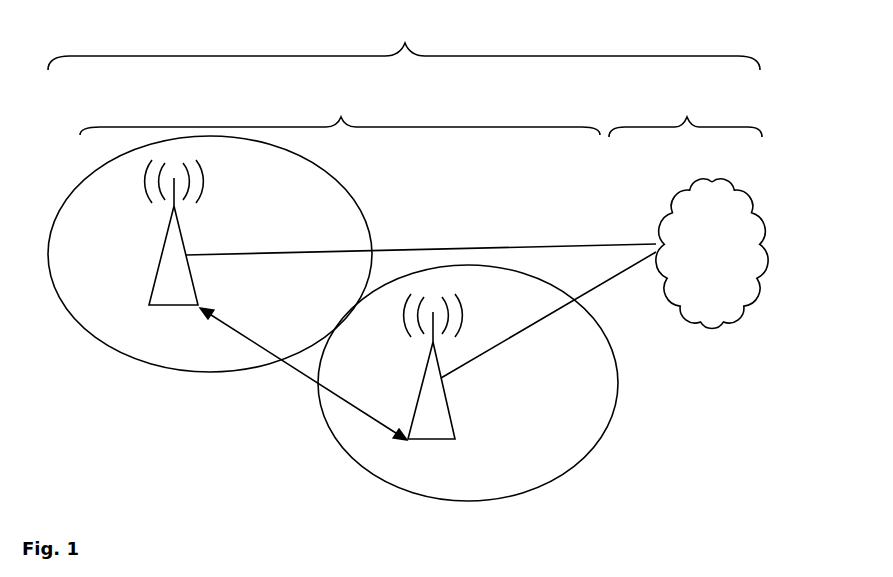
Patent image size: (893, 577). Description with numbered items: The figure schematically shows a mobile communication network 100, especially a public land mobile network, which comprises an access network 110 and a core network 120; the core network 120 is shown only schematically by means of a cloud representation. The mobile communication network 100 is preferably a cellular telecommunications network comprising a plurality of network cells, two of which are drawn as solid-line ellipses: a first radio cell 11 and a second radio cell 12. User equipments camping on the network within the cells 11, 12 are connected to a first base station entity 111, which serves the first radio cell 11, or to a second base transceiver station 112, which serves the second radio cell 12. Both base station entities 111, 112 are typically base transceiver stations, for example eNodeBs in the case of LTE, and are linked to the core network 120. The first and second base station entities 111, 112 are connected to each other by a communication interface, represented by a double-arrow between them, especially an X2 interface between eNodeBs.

The mobile communication network 100 is at (404, 44).
The access network 110 is at (340, 116).
The core network 120 is at (688, 213).
The first radio cell 11 is at (112, 347).
The second radio cell 12 is at (620, 365).
The first base station entity 111 is at (174, 232).
The second base transceiver station 112 is at (433, 366).